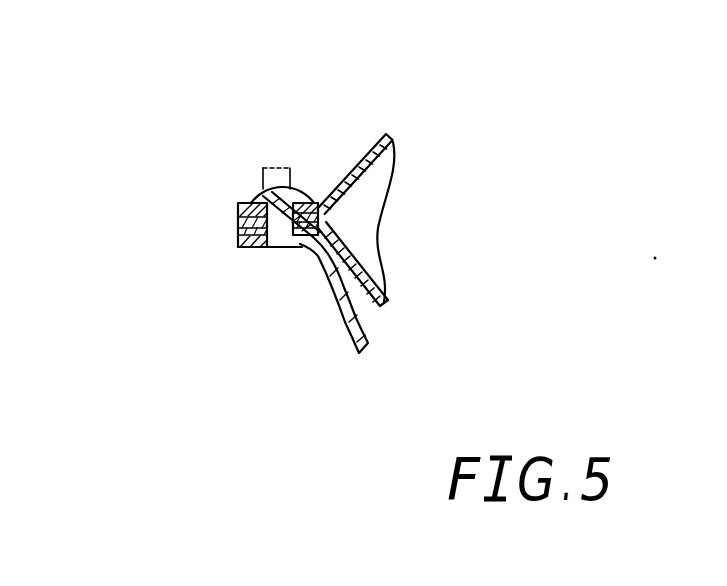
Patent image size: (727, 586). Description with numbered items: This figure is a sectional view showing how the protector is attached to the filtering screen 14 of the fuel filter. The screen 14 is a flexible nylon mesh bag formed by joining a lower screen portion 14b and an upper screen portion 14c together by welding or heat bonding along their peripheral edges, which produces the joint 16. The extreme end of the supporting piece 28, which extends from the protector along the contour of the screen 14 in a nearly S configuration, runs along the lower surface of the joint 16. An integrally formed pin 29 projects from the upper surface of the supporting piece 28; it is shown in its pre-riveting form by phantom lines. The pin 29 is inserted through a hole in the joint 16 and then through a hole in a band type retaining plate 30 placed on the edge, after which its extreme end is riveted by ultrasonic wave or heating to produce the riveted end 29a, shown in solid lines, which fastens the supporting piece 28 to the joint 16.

The screen 14 is at (374, 136).
The lower screen portion 14b is at (373, 283).
The upper screen portion 14c is at (353, 172).
The joint 16 is at (237, 238).
The supporting piece 28 is at (350, 311).
The pin 29 is at (278, 222).
The riveted end of the pin 29a is at (256, 193).
The retaining plate 30 is at (238, 207).